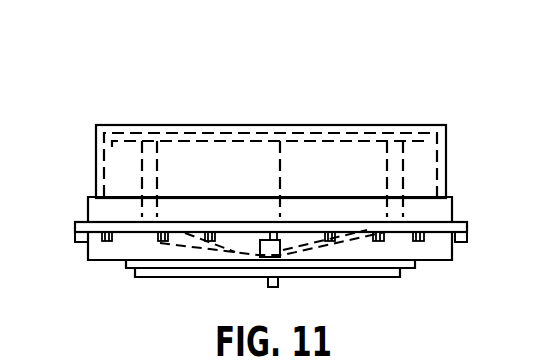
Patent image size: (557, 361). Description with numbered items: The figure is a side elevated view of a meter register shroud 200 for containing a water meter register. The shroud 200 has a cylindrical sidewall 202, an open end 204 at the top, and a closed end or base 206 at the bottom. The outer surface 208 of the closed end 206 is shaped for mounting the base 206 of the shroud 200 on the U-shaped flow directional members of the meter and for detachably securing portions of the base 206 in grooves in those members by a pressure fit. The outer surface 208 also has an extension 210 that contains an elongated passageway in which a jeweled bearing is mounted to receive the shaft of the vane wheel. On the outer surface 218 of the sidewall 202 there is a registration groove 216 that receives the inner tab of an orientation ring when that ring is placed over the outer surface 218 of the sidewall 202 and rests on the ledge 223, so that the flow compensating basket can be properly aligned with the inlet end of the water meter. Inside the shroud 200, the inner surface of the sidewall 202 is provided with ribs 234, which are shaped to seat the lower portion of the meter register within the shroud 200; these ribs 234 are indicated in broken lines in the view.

The meter register shroud 200 is at (472, 104).
The cylindrical sidewall 202 is at (446, 152).
The open end 204 is at (361, 125).
The closed end or base 206 is at (383, 277).
The outer surface of the closed end 208 is at (124, 262).
The extension 210 is at (280, 282).
The registration groove 216 is at (96, 163).
The outer surface of the sidewall 218 is at (182, 153).
The ledge 223 is at (455, 198).
The ribs 234 is at (167, 243).